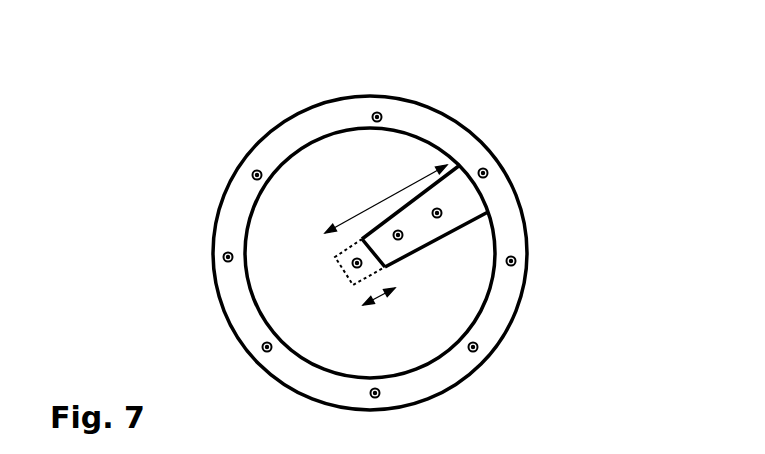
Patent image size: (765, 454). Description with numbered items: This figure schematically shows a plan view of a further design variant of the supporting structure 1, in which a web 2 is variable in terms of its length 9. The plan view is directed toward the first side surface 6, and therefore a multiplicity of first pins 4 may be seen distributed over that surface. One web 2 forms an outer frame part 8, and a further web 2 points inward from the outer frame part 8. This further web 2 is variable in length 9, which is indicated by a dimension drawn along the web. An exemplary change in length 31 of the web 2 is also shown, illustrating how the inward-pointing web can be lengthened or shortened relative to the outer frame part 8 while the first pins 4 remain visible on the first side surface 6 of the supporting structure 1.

The supporting structure 1 is at (550, 153).
The web 2 is at (242, 197).
The first pin 4 is at (516, 260).
The first side surface 6 is at (403, 127).
The outer frame part 8 is at (460, 365).
The length 9 is at (372, 203).
The change in length 31 is at (390, 295).